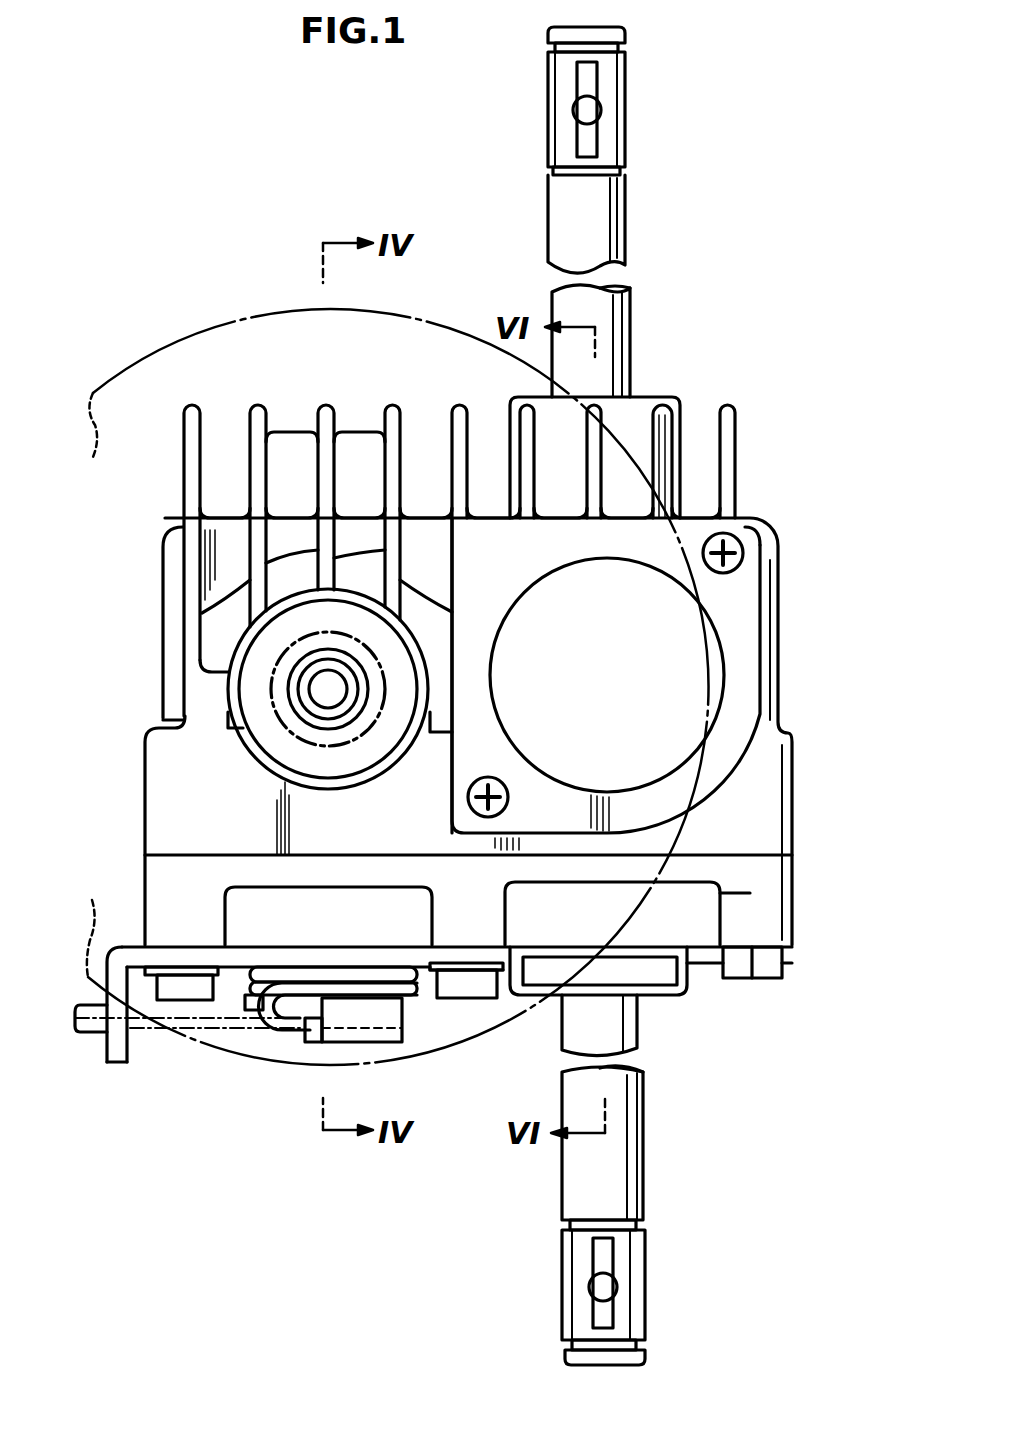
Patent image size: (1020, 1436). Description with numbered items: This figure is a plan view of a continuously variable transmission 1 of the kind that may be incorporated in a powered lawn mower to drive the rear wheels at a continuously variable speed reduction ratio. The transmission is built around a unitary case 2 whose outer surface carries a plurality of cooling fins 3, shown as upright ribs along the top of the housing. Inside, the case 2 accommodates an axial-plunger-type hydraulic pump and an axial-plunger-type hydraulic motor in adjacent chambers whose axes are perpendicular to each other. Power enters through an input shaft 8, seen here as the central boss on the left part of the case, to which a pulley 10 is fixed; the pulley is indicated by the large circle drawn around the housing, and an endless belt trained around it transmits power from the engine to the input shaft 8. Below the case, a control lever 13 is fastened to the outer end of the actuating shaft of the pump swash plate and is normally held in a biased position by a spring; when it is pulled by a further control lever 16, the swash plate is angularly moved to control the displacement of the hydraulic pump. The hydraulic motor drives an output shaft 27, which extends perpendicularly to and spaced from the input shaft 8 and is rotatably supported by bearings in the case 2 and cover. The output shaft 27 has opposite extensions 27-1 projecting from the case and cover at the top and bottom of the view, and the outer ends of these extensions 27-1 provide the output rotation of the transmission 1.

The continuously variable transmission 1 is at (797, 600).
The unitary case 2 is at (180, 765).
The cooling fins 3 is at (256, 410).
The input shaft 8 is at (316, 689).
The pulley 10 is at (177, 342).
The control lever 13 is at (390, 1018).
The control lever 16 is at (203, 1027).
The output shaft 27 is at (637, 1022).
The extensions 27-1 is at (615, 200).